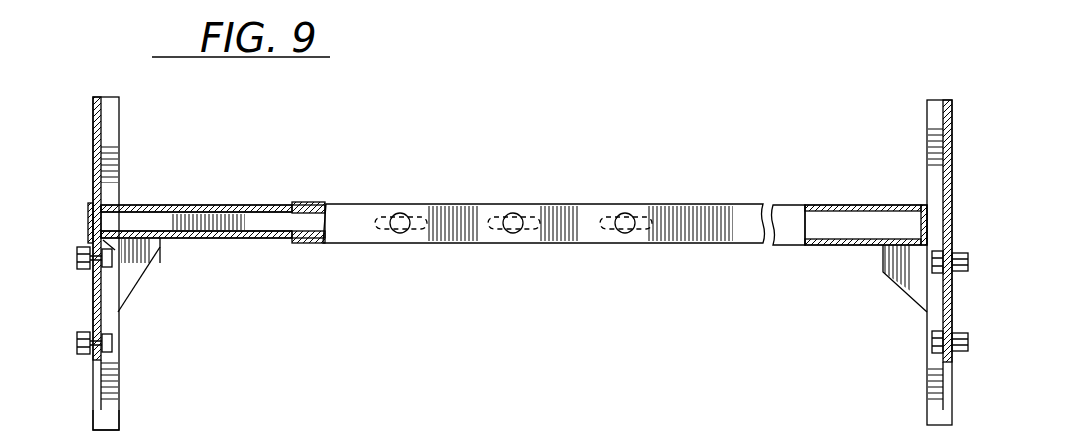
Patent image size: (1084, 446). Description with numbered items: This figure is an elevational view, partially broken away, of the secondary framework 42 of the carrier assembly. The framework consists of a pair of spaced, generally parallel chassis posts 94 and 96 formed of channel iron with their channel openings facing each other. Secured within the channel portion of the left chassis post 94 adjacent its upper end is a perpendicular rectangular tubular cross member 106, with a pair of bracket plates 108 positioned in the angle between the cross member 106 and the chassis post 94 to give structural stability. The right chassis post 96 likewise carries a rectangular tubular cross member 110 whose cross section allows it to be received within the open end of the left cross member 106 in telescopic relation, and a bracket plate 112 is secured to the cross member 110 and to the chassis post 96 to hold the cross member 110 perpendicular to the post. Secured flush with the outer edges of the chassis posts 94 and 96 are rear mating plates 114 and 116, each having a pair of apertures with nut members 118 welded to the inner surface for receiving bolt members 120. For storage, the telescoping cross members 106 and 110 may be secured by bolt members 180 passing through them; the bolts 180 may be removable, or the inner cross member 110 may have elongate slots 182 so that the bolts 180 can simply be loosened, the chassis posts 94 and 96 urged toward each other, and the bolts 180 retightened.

The secondary framework 42 is at (535, 168).
The left chassis post 94 is at (934, 155).
The right chassis post 96 is at (110, 130).
The cross member 106 is at (683, 212).
The bracket plates 108 is at (897, 266).
The cross member 110 is at (236, 205).
The bracket plate 112 is at (148, 256).
The rear mating plate 114 is at (926, 313).
The rear mating plate 116 is at (104, 386).
The nut members 118 is at (113, 264).
The bolt members 120 is at (80, 250).
The bolt member 180 is at (400, 212).
The elongate slots 182 is at (473, 236).